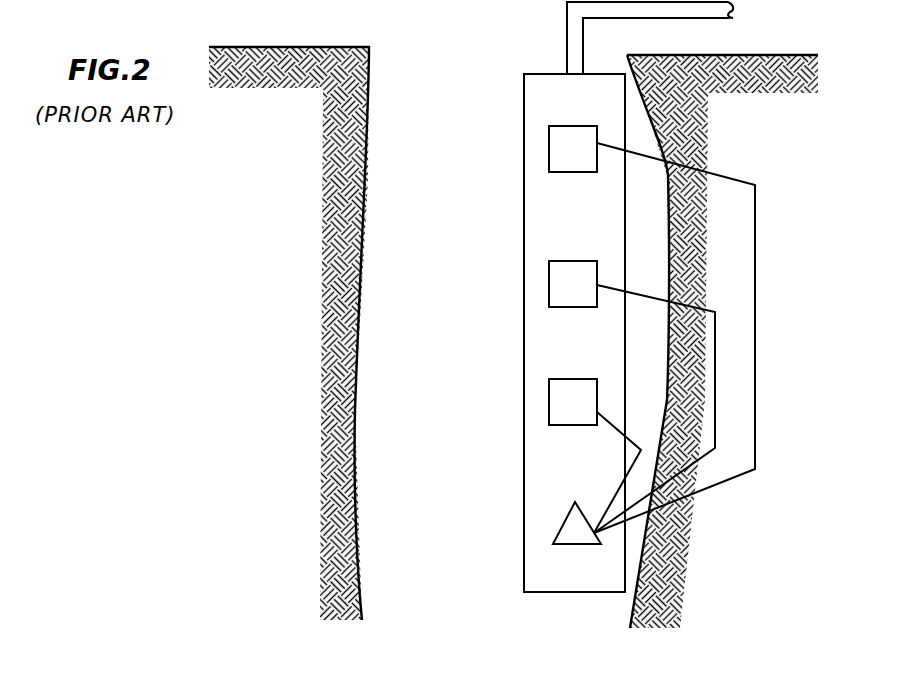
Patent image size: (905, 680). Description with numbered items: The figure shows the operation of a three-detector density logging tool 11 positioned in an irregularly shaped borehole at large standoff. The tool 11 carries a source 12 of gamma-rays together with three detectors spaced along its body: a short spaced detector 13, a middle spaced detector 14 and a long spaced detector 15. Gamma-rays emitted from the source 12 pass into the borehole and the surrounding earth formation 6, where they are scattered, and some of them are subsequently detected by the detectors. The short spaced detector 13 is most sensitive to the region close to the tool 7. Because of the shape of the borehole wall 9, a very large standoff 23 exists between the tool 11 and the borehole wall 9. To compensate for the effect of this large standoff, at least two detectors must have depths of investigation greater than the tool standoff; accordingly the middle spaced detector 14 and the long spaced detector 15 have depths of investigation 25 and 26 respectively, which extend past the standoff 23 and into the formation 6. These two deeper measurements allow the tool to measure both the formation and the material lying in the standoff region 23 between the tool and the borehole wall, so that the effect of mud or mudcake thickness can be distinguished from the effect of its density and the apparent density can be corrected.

The earth formation 6 is at (812, 164).
The region close to the tool 7 is at (630, 470).
The borehole wall 9 is at (658, 128).
The three-detector tool 11 is at (543, 100).
The source 12 is at (562, 522).
The short spaced (SS) detector 13 is at (565, 395).
The middle spaced (MS) detector 14 is at (558, 283).
The long spaced (LS) detector 15 is at (565, 152).
The standoff 23 is at (657, 252).
The depth of investigation 25 is at (715, 330).
The depth of investigation 26 is at (757, 345).